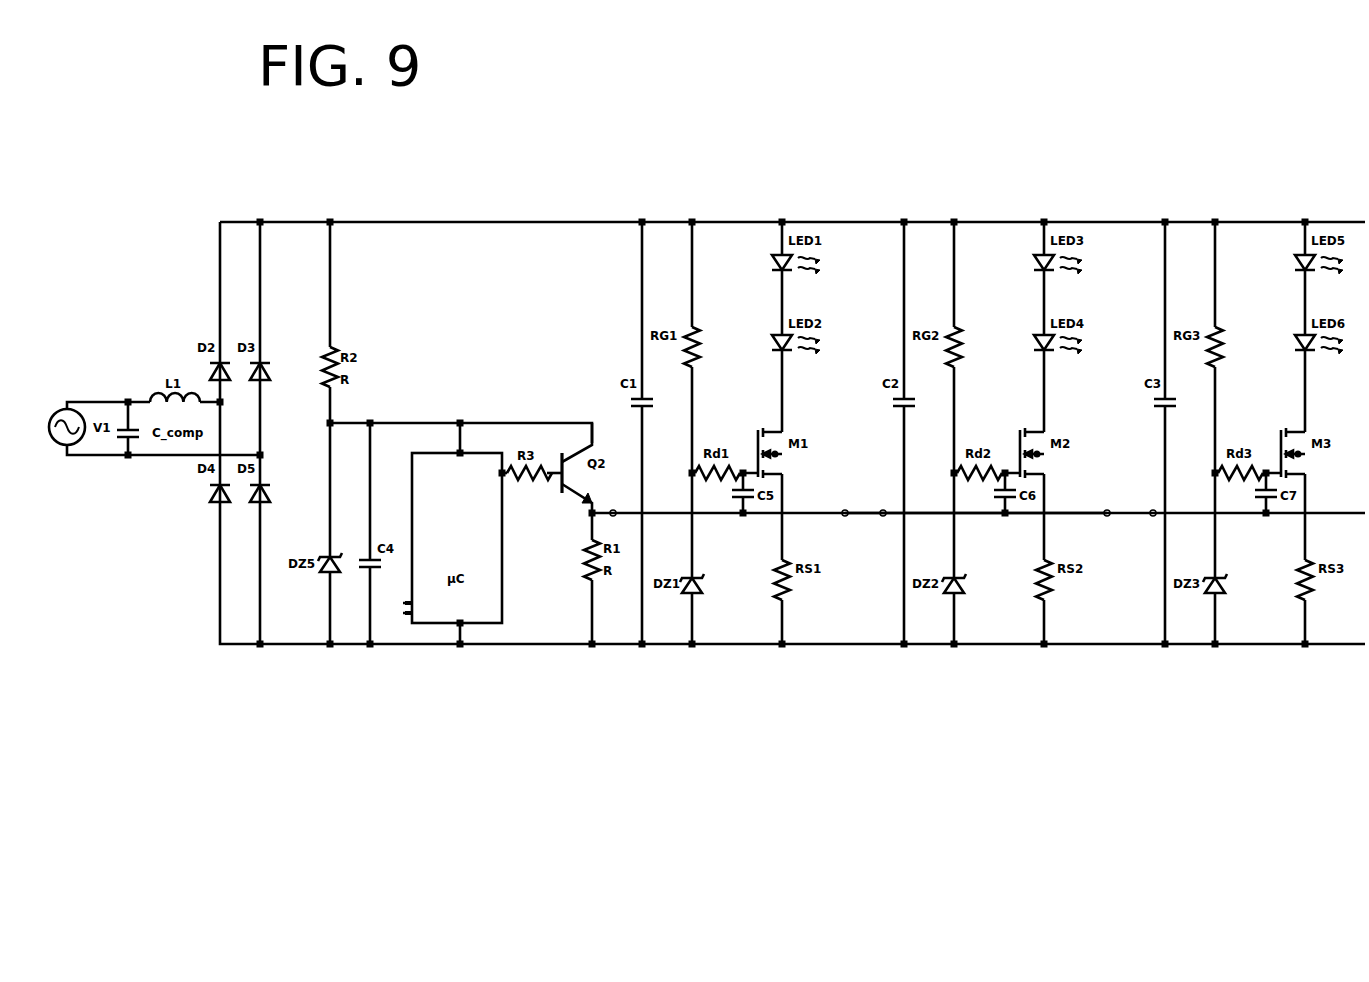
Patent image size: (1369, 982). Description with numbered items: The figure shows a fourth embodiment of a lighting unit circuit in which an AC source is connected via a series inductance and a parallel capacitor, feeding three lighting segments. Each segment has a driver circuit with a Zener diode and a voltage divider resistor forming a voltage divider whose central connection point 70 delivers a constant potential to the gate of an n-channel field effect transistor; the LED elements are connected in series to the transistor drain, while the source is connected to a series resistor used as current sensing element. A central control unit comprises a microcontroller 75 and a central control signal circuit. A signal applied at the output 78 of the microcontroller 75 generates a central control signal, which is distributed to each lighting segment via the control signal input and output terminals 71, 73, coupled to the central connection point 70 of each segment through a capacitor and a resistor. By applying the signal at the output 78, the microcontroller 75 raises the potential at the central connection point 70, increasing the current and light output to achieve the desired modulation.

The central connection point 70 is at (692, 473).
The control signal input and output terminal 71 is at (613, 510).
The control signal input and output terminal 73 is at (845, 517).
The microcontroller 75 is at (467, 546).
The output 78 is at (500, 473).